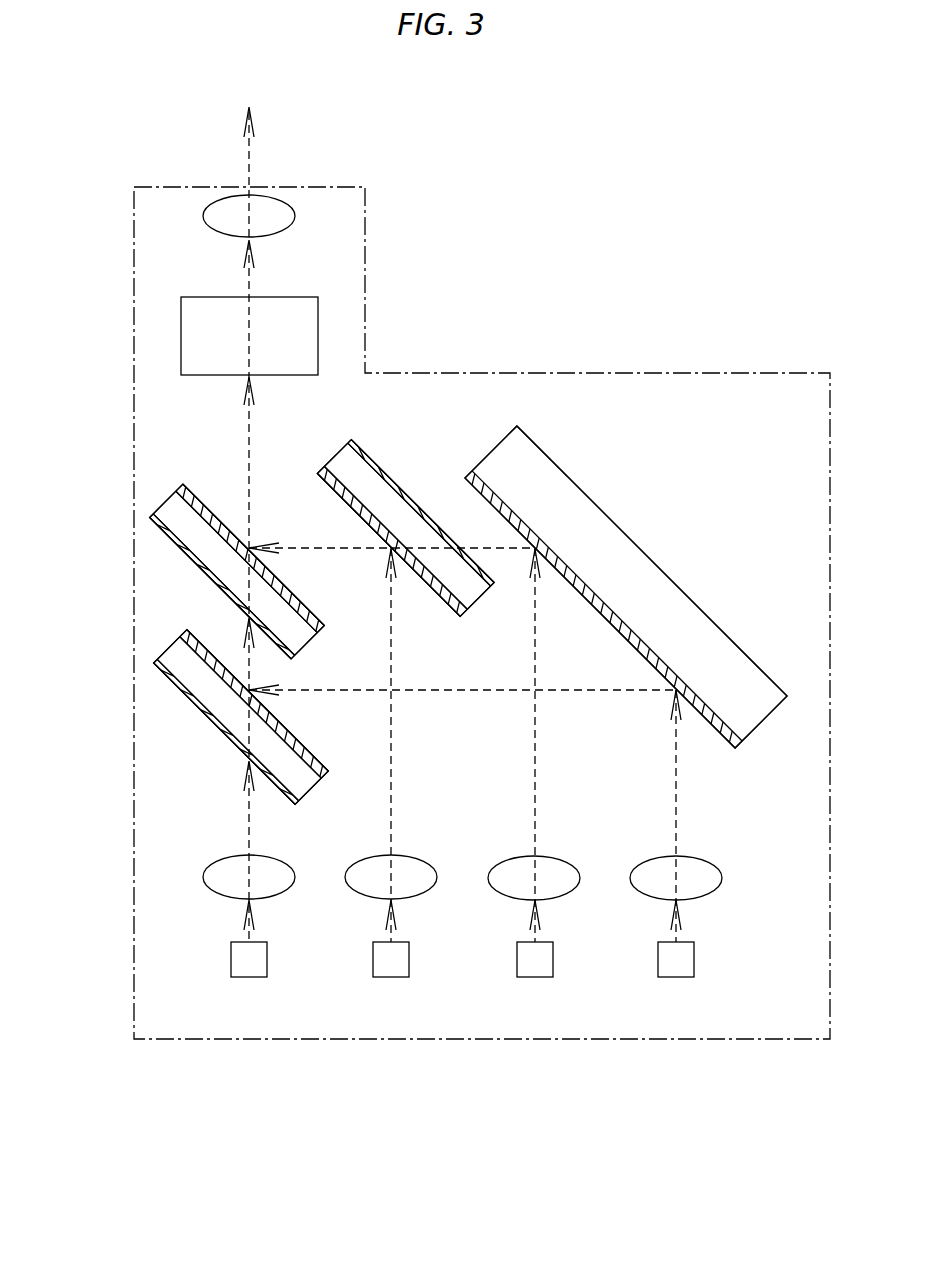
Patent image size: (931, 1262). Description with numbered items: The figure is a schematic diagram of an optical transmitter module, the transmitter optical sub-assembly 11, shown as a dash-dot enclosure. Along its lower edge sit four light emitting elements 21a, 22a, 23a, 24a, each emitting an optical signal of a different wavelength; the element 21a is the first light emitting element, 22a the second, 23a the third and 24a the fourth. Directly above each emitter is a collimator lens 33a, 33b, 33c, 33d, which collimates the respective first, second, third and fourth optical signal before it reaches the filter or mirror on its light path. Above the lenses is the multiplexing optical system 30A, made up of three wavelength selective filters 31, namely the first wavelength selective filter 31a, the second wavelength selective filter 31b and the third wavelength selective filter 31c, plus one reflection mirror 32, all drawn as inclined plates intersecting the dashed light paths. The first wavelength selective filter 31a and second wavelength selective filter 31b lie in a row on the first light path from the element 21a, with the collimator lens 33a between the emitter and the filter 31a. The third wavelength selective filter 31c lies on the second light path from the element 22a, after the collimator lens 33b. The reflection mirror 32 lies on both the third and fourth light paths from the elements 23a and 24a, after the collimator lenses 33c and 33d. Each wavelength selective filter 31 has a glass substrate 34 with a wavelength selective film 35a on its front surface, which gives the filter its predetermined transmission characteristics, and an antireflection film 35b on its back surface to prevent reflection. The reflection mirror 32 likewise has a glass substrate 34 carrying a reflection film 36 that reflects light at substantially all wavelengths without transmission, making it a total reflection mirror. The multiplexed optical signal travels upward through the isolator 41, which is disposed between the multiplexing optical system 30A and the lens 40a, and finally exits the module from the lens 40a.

The transmitter optical sub-assembly 11 is at (689, 372).
The multiplexing optical system 30A is at (722, 525).
The wavelength selective filter 31 is at (152, 494).
The first wavelength selective filter 31a is at (241, 717).
The second wavelength selective filter 31b is at (237, 571).
The third wavelength selective filter 31c is at (405, 528).
The reflection mirror 32 is at (613, 565).
The collimator lens 33a is at (204, 880).
The collimator lens 33b is at (346, 880).
The collimator lens 33c is at (489, 881).
The collimator lens 33d is at (631, 881).
The glass substrate 34 is at (308, 646).
The wavelength selective film 35a is at (206, 503).
The antireflection film 35b is at (183, 553).
The reflection film 36 is at (727, 744).
The light emitting element 21a is at (231, 953).
The light emitting element 22a is at (373, 953).
The light emitting element 23a is at (517, 953).
The light emitting element 24a is at (658, 953).
The lens 40a is at (295, 211).
The isolator 41 is at (181, 324).